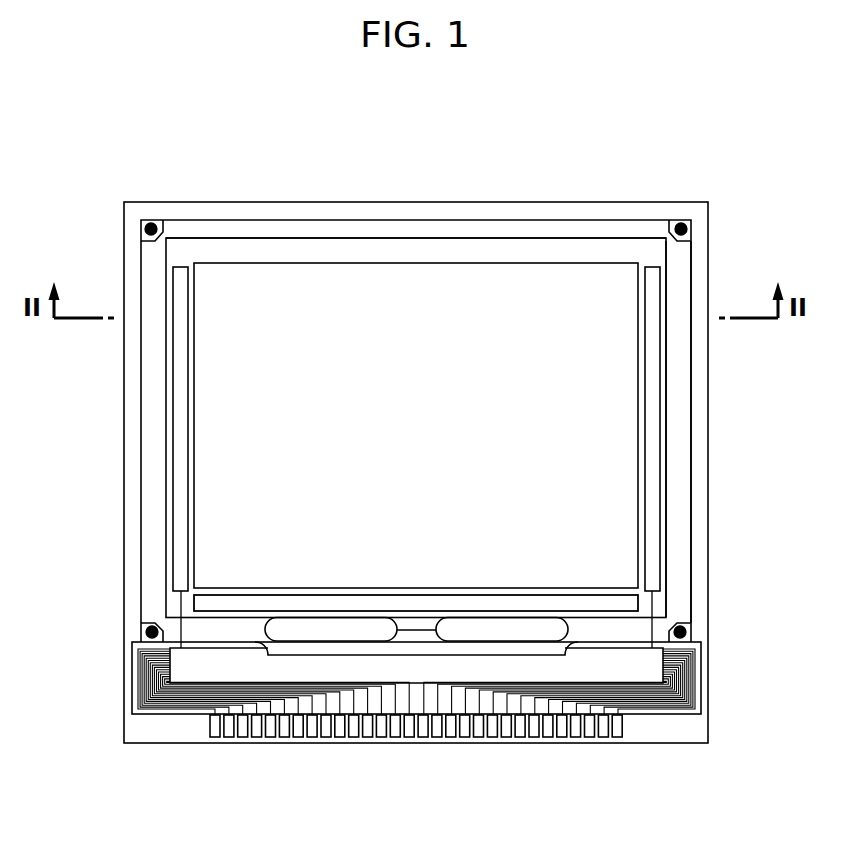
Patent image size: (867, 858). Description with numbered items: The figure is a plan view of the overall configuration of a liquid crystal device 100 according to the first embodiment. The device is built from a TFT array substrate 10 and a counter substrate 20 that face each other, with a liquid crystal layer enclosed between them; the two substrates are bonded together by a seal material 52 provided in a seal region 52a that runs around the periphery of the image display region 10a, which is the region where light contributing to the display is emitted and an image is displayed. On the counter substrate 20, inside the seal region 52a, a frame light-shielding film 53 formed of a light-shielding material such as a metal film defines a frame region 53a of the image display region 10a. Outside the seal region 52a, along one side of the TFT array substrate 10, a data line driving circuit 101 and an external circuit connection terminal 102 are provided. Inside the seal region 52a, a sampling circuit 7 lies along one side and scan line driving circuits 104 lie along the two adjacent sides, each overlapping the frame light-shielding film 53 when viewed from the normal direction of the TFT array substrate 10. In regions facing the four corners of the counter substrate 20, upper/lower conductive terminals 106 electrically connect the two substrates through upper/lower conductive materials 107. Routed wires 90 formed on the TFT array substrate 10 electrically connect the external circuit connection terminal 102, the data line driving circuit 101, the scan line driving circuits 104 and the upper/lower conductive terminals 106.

The liquid crystal device 100 is at (649, 121).
The TFT array substrate 10 is at (252, 210).
The image display region 10a is at (237, 383).
The counter substrate 20 is at (438, 218).
The sampling circuit 7 is at (275, 598).
The seal material 52 is at (682, 420).
The seal region 52a is at (682, 372).
The frame light-shielding film 53 is at (577, 250).
The frame region 53a is at (487, 250).
The scan line driving circuits 104 is at (653, 478).
The upper/lower conductive terminals 106 is at (160, 230).
The upper/lower conductive materials 107 is at (145, 633).
The routed wires 90 is at (137, 692).
The data line driving circuit 101 is at (192, 670).
The external circuit connection terminal 102 is at (383, 716).